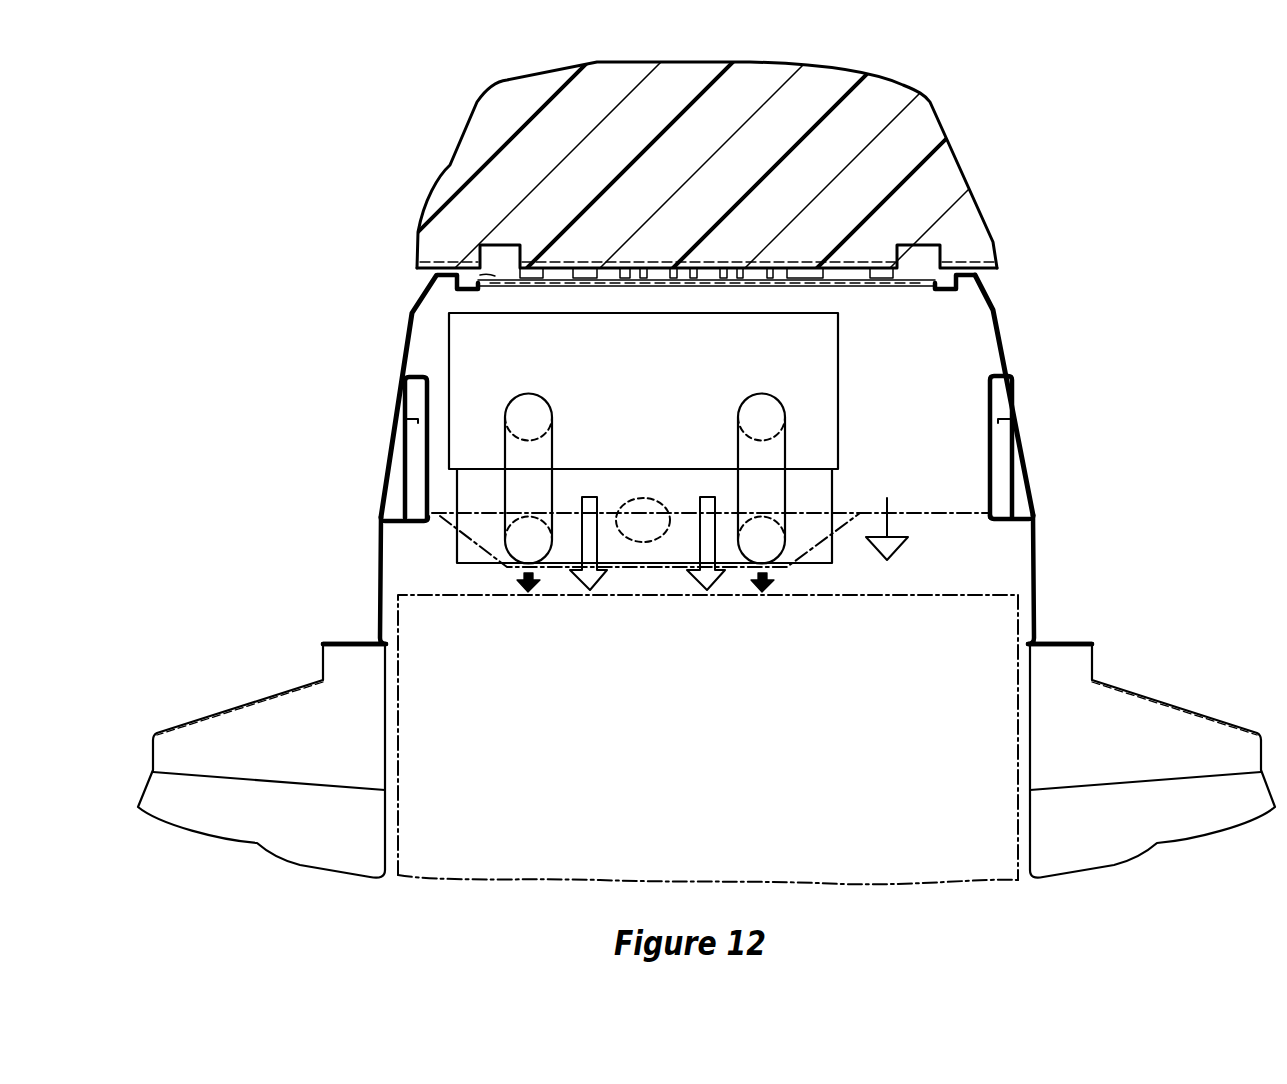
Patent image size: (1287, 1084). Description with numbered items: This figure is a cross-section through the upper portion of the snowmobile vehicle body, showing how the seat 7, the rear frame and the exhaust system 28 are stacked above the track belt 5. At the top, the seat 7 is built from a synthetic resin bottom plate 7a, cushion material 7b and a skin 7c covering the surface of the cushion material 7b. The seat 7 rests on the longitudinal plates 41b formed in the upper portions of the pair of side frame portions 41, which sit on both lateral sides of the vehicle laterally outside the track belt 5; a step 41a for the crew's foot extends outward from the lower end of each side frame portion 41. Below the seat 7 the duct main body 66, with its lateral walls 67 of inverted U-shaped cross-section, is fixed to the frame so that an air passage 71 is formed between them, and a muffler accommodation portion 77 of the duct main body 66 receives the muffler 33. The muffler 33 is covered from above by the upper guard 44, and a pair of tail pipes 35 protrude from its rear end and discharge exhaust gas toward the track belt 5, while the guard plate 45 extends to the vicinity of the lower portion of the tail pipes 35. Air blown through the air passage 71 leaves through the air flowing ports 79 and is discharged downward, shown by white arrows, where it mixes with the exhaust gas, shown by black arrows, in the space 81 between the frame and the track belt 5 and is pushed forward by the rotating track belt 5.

The seat 7 is at (950, 152).
The bottom plate 7a is at (985, 245).
The cushion material 7b is at (968, 205).
The skin 7c is at (975, 180).
The muffler accommodation portion 77 is at (490, 276).
The air flowing ports 79 is at (433, 287).
The upper guard 44 is at (449, 340).
The air passage 71 is at (852, 399).
The exhaust system 28 is at (858, 338).
The longitudinal plate 41b is at (413, 392).
The duct main body 66 is at (400, 403).
The lateral walls 67 is at (1010, 355).
The side frame portion 41 is at (380, 610).
The step 41a is at (328, 638).
The tail pipes 35 is at (510, 493).
The muffler 33 is at (460, 553).
The guard plate 45 is at (720, 567).
The air passage 81 is at (968, 558).
The track belt 5 is at (398, 725).